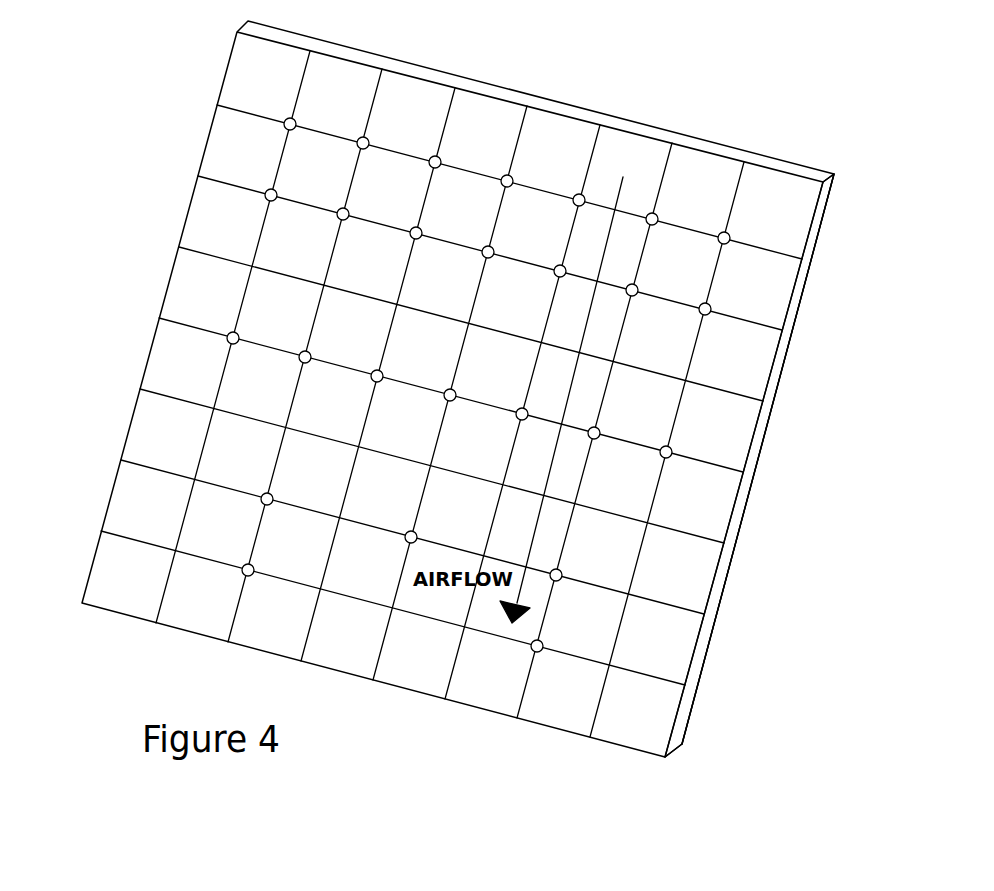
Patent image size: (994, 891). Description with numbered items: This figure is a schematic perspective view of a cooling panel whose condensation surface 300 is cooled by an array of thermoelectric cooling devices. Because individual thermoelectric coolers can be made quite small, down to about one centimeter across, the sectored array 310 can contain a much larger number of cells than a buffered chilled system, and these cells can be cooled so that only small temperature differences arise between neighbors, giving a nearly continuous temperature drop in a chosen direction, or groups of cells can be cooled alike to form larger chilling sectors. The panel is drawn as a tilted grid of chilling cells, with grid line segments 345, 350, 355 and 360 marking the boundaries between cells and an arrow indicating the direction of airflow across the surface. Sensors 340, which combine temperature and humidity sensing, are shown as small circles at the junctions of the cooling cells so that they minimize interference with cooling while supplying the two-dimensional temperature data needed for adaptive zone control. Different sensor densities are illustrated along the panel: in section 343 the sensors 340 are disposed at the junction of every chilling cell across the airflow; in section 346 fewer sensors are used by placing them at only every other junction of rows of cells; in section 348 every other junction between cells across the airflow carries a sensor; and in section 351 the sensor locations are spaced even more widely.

The condensation surface 300 is at (518, 75).
The sectored array 310 is at (217, 40).
The sensors 340 is at (657, 225).
The section 343 is at (802, 358).
The grid segments 345 is at (367, 150).
The section 346 is at (758, 478).
The section 348 is at (722, 620).
The grid line segment 350 is at (408, 388).
The section 351 is at (702, 690).
The grid line segment 355 is at (436, 540).
The grid line segment 360 is at (435, 622).